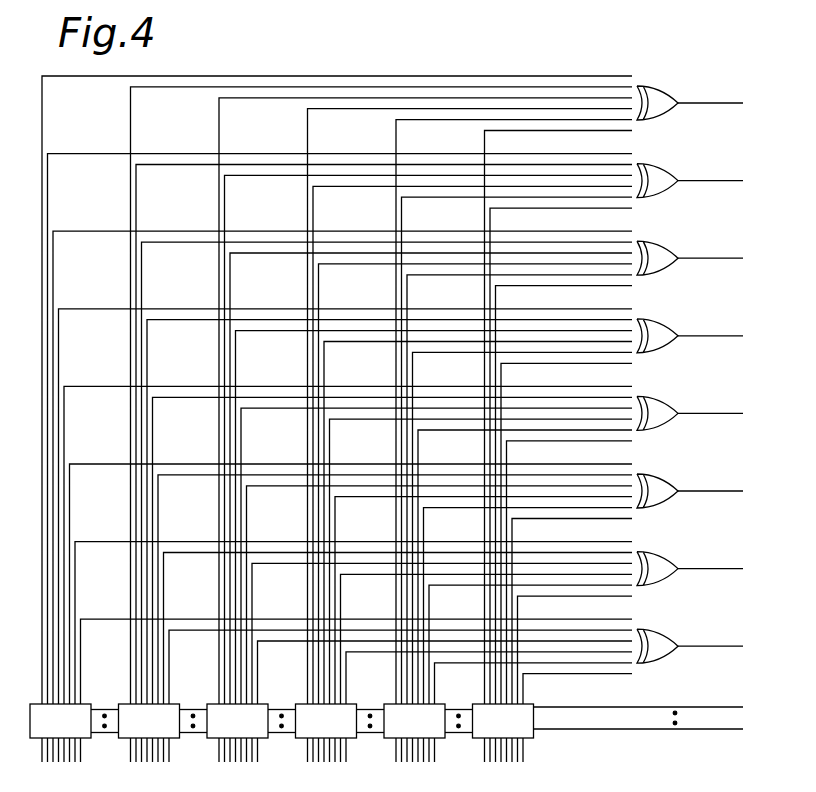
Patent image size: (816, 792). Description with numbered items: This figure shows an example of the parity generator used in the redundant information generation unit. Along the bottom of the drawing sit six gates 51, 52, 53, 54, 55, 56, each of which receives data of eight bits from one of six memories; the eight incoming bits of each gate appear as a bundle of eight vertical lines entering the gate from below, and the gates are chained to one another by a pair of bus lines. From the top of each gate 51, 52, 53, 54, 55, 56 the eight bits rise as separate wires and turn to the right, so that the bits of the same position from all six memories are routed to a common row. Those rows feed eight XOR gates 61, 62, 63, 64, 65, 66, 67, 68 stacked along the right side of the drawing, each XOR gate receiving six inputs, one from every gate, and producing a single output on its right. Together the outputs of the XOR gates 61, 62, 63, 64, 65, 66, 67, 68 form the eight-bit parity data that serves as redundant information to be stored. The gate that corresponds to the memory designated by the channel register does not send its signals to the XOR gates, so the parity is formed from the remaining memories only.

The gate 51 is at (91, 704).
The gate 52 is at (180, 704).
The gate 53 is at (268, 704).
The gate 54 is at (356, 704).
The gate 55 is at (445, 704).
The gate 56 is at (534, 703).
The XOR gate 61 is at (672, 93).
The XOR gate 62 is at (672, 171).
The XOR gate 63 is at (672, 248).
The XOR gate 64 is at (672, 326).
The XOR gate 65 is at (672, 403).
The XOR gate 66 is at (672, 481).
The XOR gate 67 is at (672, 559).
The XOR gate 68 is at (672, 636).